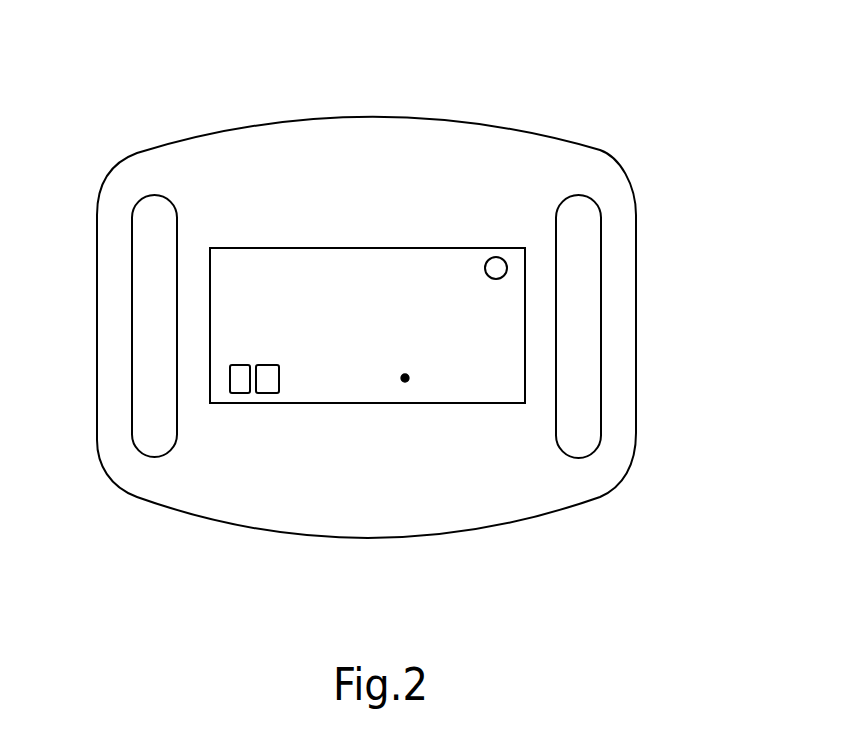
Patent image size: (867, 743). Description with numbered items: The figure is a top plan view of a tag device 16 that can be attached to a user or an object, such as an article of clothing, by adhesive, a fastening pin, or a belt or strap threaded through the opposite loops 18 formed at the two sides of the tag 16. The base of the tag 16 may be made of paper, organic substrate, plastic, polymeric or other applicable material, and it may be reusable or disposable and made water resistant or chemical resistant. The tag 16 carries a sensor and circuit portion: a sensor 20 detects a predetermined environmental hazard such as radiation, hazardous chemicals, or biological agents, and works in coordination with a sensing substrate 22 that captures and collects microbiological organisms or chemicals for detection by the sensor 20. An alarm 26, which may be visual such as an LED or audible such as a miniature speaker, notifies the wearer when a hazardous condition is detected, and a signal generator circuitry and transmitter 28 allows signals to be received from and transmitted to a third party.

The tag device 16 is at (200, 103).
The loops 18 is at (147, 317).
The sensor 20 is at (495, 255).
The sensing substrate 22 is at (405, 378).
The alarm 26 is at (228, 398).
The signal generator circuitry and transmitter 28 is at (263, 398).